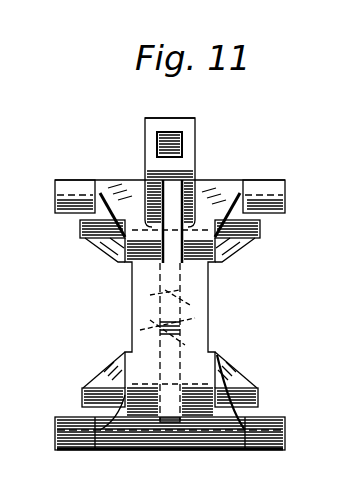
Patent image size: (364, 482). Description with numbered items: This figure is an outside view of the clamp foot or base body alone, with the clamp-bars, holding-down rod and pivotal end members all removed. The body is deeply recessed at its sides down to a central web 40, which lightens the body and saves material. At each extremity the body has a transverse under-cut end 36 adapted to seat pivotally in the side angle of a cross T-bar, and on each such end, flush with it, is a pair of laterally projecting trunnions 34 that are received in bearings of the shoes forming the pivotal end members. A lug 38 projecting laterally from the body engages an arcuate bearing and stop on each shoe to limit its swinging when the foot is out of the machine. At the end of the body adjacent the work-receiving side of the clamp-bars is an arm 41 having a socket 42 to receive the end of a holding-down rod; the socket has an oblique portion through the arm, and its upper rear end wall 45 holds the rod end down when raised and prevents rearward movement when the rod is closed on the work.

The trunnion 34 is at (67, 212).
The under-cut end 36 is at (217, 182).
The lug 38 is at (95, 240).
The web 40 is at (187, 320).
The arm 41 is at (147, 152).
The socket 42 is at (162, 125).
The upper wall 45 is at (180, 142).